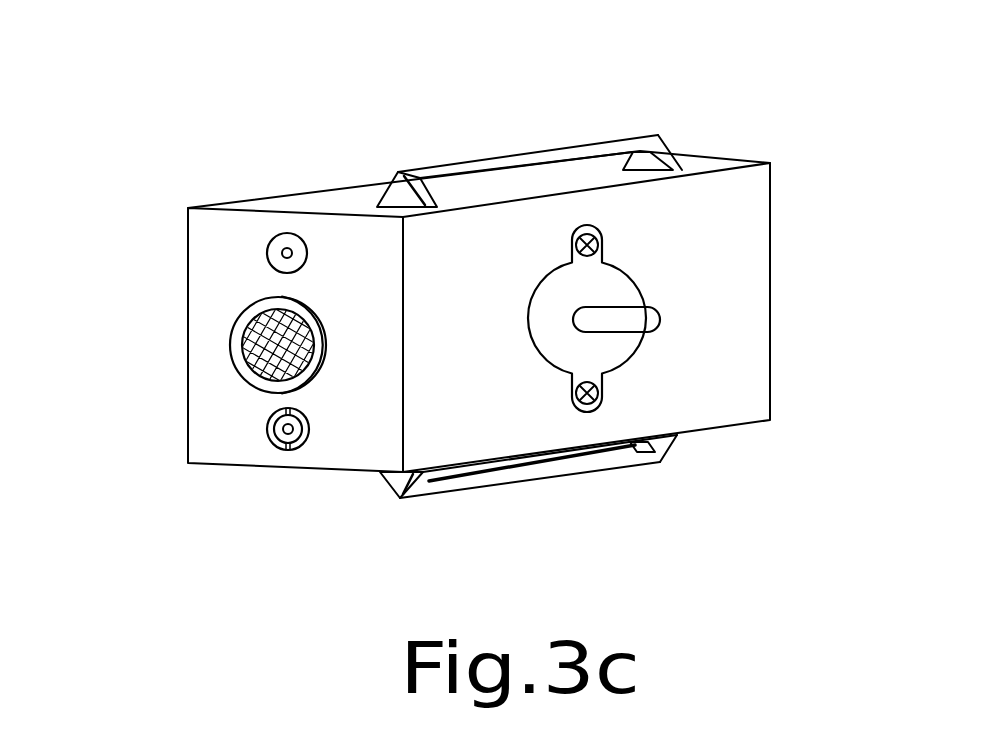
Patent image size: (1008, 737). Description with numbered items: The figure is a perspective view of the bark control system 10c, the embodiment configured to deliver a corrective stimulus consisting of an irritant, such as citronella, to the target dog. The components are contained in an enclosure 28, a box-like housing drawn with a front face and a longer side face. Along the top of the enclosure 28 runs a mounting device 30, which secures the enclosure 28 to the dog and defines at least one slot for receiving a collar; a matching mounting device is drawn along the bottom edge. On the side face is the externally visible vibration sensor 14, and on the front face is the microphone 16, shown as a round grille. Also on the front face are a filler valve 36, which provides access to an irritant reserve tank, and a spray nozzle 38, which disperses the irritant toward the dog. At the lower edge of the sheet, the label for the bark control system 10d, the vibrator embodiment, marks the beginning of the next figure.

In FIG. 3C, the bark control system 10c is at (150, 114).
In FIG. 3D, the bark control system 10d is at (123, 736).
In FIG. 3C, the vibration sensor 14 is at (647, 320).
In FIG. 3C, the microphone 16 is at (247, 317).
In FIG. 3C, the enclosure 28 is at (733, 393).
In FIG. 3C, the mounting device 30 is at (620, 143).
In FIG. 3D, the mounting device 30 is at (660, 736).
In FIG. 3C, the filler valve 36 is at (277, 247).
In FIG. 3C, the spray nozzle 38 is at (268, 424).